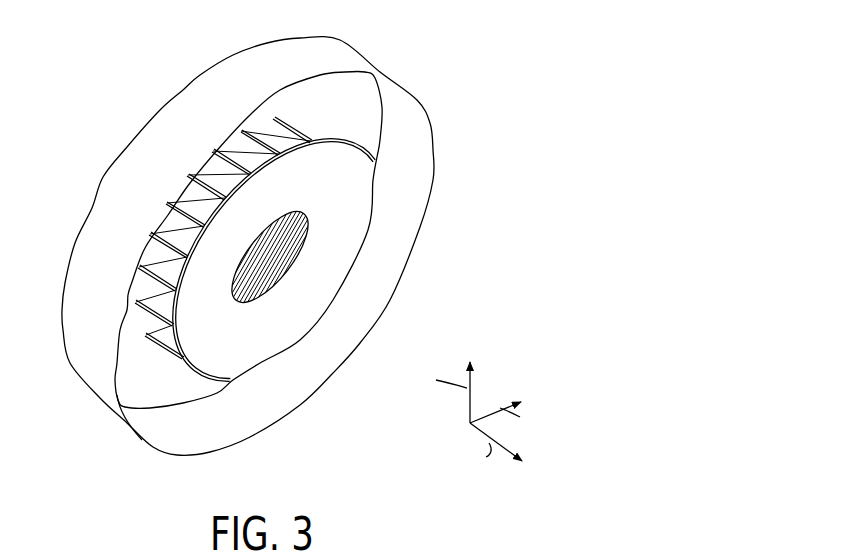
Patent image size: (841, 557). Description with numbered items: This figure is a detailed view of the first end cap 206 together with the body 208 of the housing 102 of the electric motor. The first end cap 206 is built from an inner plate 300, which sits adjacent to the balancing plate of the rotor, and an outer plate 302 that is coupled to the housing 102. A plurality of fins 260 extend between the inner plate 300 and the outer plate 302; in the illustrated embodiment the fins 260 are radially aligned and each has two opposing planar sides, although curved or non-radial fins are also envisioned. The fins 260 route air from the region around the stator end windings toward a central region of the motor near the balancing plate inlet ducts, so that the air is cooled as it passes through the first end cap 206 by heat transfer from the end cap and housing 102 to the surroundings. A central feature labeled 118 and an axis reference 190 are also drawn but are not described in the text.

The housing 102 is at (387, 64).
The shaft bore 118 is at (295, 280).
The coordinate system 190 is at (505, 386).
The first end cap 206 is at (390, 206).
The body of the housing 208 is at (320, 70).
The fins 260 is at (287, 106).
The inner plate 300 is at (312, 193).
The outer plate 302 is at (332, 113).